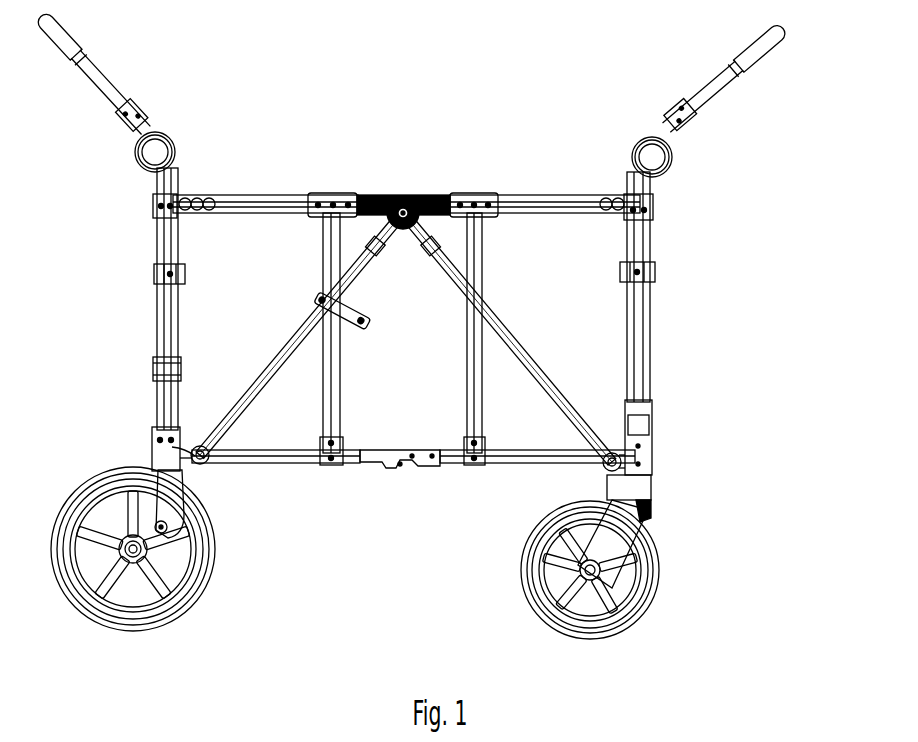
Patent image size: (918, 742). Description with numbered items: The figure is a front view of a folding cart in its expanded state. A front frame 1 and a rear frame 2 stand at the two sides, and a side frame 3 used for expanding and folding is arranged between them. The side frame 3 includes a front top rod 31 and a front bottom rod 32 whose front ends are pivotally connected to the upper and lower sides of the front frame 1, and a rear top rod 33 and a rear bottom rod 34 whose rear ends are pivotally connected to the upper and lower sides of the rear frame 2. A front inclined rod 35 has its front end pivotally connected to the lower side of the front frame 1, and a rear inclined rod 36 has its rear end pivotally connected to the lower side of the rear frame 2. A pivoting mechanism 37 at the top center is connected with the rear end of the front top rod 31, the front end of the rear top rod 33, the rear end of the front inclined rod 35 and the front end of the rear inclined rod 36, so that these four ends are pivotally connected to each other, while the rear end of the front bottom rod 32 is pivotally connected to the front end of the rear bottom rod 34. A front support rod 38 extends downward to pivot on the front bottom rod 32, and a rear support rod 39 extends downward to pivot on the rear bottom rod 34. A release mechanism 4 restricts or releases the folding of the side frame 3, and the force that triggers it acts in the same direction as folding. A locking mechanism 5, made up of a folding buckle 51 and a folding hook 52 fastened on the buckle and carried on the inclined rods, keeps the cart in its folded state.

The front frame 1 is at (641, 351).
The rear frame 2 is at (163, 334).
The side frame 3 is at (406, 261).
The front top rod 31 is at (545, 196).
The front bottom rod 32 is at (506, 466).
The rear top rod 33 is at (260, 196).
The rear bottom rod 34 is at (274, 466).
The front inclined rod 35 is at (630, 394).
The rear inclined rod 36 is at (205, 398).
The pivoting mechanism 37 is at (390, 200).
The front support rod 38 is at (656, 272).
The rear support rod 39 is at (155, 274).
The release mechanism 4 is at (395, 470).
The locking mechanism 5 is at (793, 568).
The folding buckle 51 is at (486, 332).
The folding hook 52 is at (347, 326).